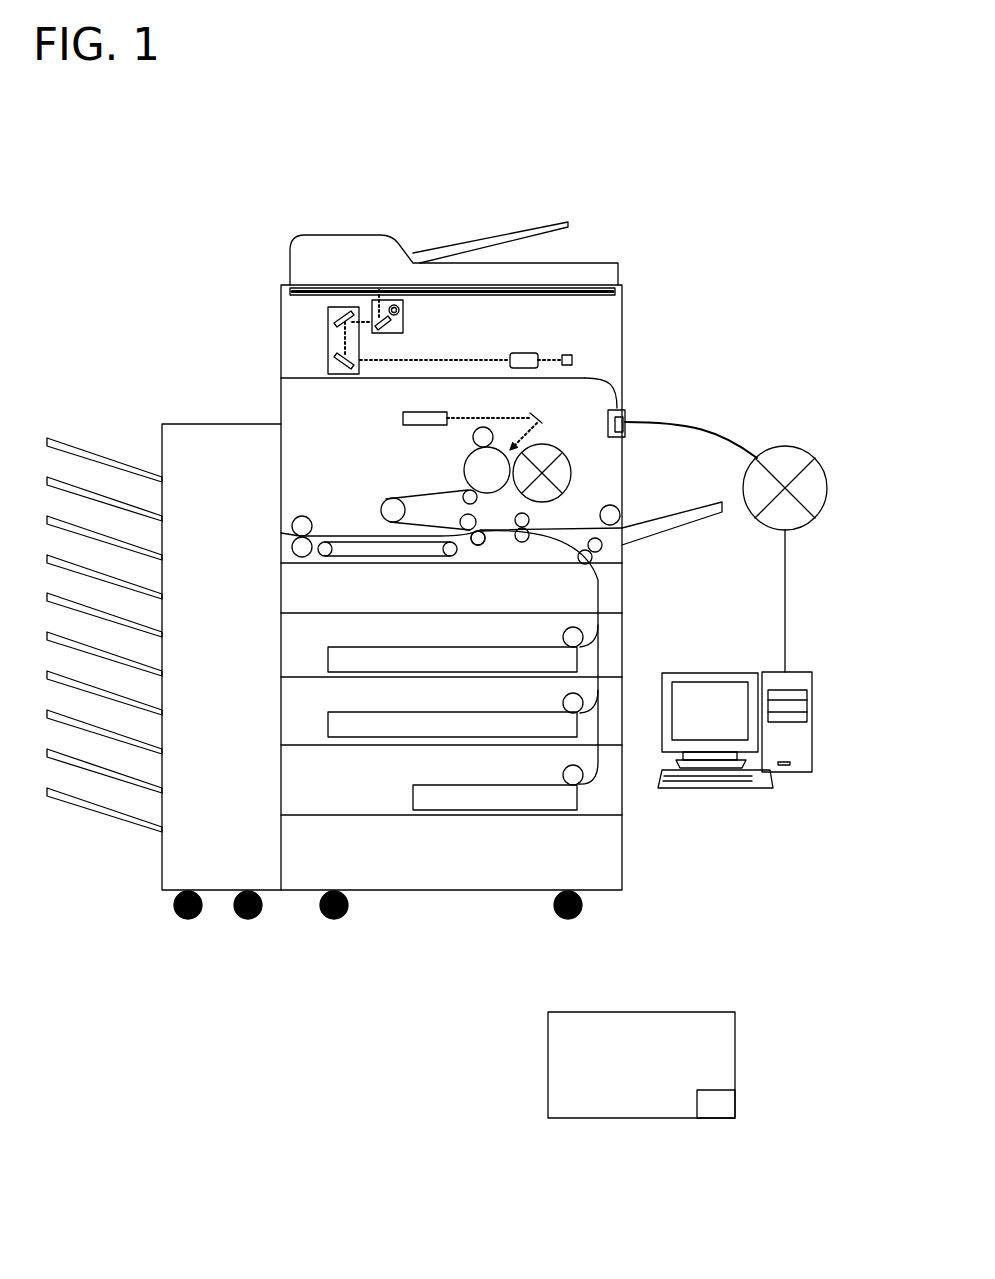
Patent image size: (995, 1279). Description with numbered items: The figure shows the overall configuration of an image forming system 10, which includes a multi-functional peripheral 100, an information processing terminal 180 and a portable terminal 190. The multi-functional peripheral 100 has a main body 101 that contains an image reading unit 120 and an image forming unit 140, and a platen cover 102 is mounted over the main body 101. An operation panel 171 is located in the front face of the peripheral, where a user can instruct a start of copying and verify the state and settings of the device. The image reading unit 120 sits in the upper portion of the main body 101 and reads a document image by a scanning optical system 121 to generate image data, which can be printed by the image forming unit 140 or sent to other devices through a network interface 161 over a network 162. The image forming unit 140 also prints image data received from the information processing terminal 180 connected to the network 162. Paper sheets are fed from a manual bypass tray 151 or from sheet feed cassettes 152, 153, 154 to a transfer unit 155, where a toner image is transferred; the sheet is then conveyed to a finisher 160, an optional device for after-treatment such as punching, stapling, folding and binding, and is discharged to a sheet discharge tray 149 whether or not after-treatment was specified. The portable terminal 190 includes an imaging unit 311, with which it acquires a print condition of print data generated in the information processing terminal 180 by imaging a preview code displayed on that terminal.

The image forming system 10 is at (600, 175).
The multi-functional peripheral 100 is at (430, 227).
The main body 101 is at (261, 387).
The platen cover 102 is at (265, 237).
The image reading unit 120 is at (622, 348).
The scanning optical system 121 is at (608, 318).
The image forming unit 140 is at (622, 380).
The sheet discharge tray 149 is at (67, 447).
The manual bypass tray 151 is at (665, 527).
The sheet feed cassette 152 is at (328, 657).
The sheet feed cassette 153 is at (328, 722).
The sheet feed cassette 154 is at (413, 795).
The transfer unit 155 is at (476, 546).
The finisher 160 is at (162, 424).
The network interface 161 is at (630, 413).
The network 162 is at (803, 450).
The operation panel 171 is at (618, 285).
The information processing terminal 180 is at (792, 773).
The portable terminal 190 is at (703, 1012).
The imaging unit 311 is at (727, 1102).